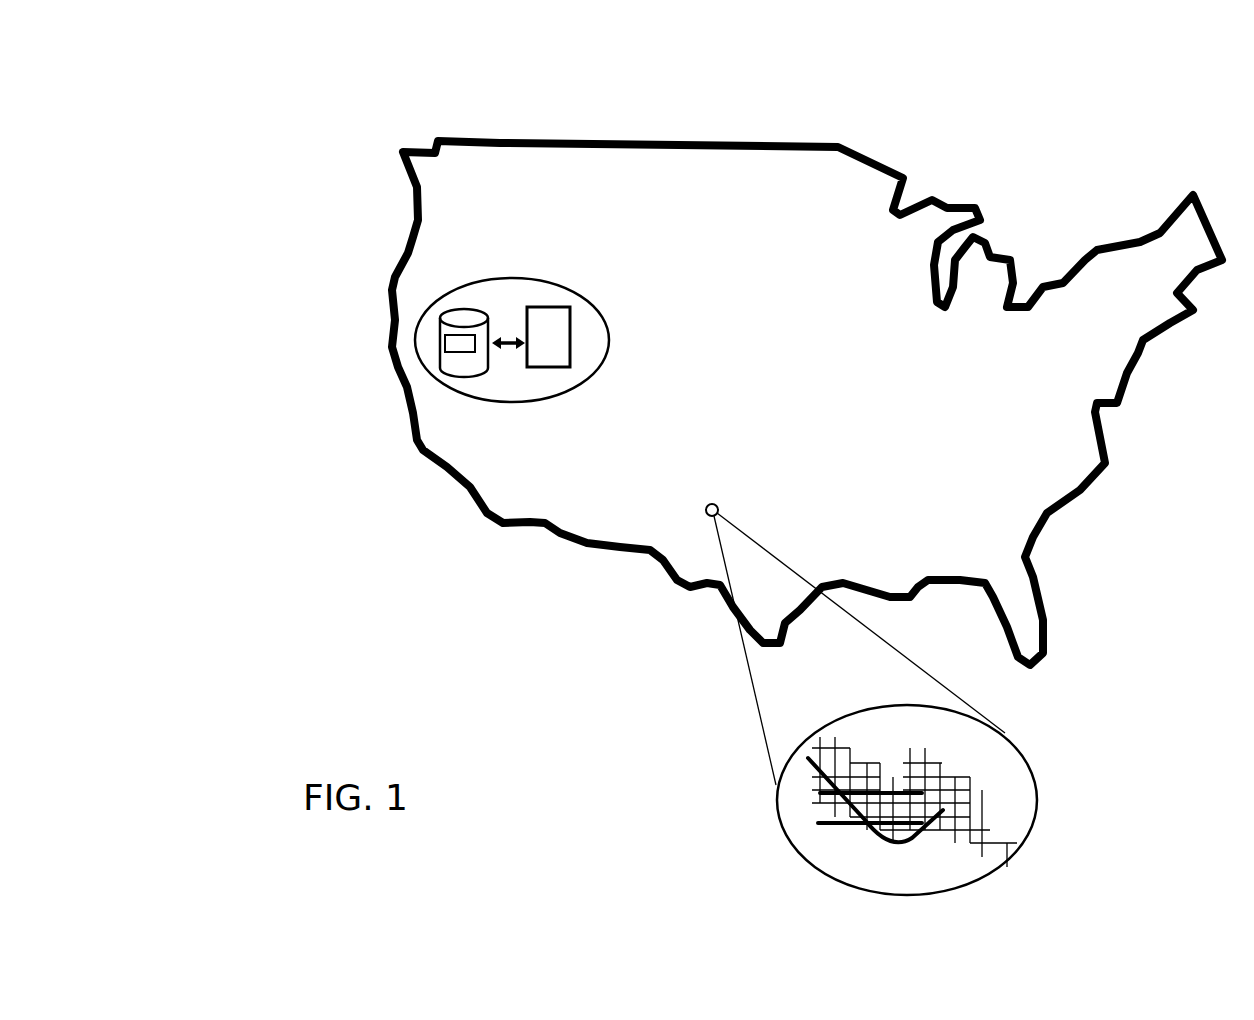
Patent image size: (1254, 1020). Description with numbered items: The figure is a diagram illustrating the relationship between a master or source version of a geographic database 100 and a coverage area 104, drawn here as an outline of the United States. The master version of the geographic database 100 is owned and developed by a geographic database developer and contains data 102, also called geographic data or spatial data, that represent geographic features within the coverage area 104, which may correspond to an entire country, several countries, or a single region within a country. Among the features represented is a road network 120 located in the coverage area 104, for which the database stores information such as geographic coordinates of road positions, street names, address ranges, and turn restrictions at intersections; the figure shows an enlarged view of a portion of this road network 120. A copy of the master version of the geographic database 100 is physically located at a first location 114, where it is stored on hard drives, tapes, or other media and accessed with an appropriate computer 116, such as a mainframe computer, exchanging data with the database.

The master version of the geographic database 100 is at (438, 337).
The data 102 is at (466, 372).
The coverage area 104 is at (972, 180).
The first location 114 is at (517, 420).
The computer 116 is at (542, 303).
The road network 120 is at (955, 760).